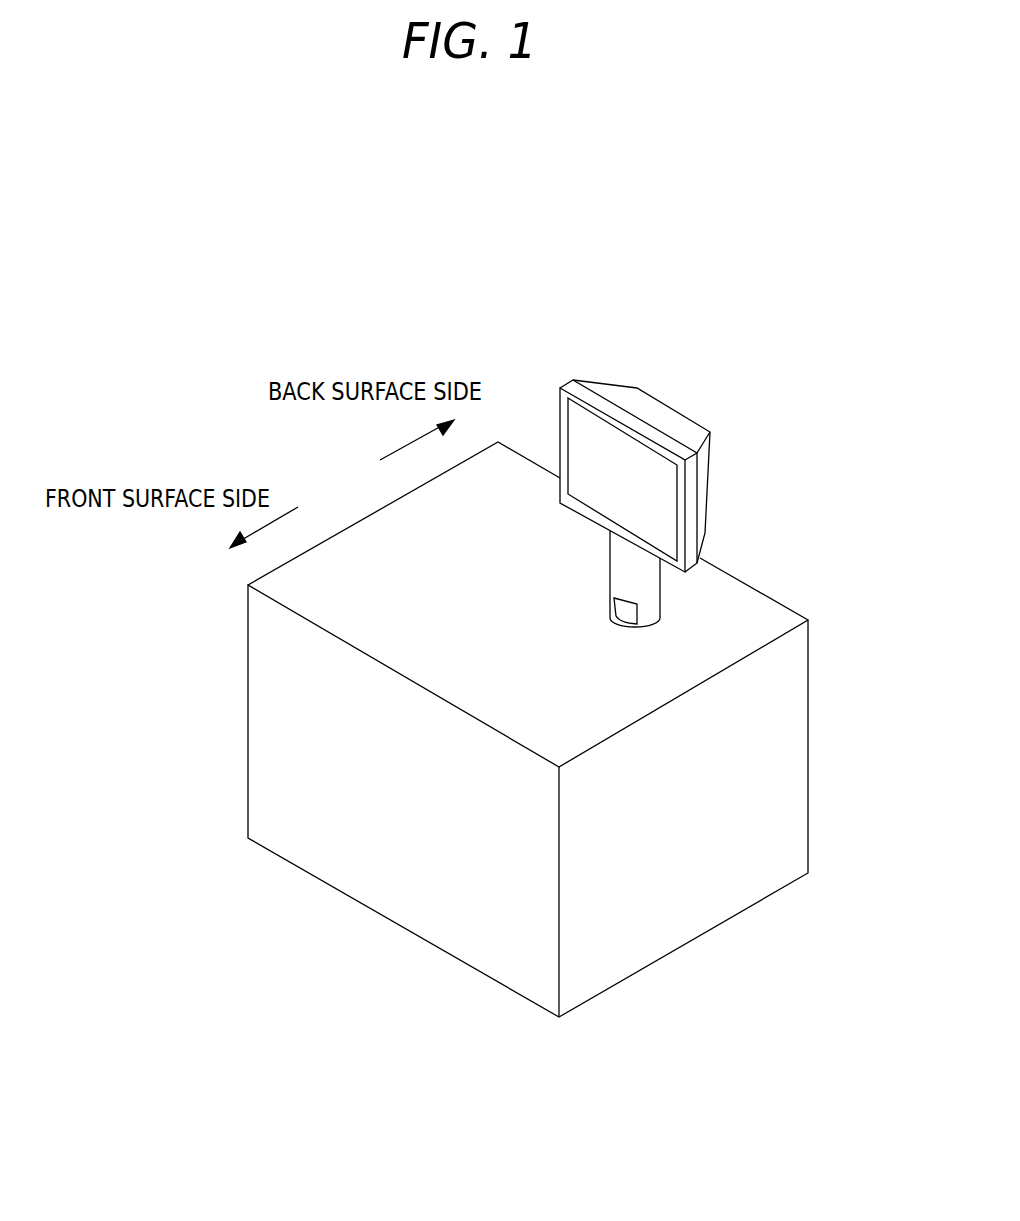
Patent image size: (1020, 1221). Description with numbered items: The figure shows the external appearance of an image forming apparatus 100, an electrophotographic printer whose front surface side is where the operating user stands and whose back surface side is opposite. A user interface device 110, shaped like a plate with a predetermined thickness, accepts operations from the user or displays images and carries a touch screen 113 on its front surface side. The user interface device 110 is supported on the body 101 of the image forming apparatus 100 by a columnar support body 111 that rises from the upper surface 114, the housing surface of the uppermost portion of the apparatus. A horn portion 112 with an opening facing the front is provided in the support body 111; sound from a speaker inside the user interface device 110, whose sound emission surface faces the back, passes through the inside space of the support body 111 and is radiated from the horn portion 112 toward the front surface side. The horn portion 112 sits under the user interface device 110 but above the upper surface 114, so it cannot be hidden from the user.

The image forming apparatus 100 is at (808, 440).
The body 101 is at (793, 792).
The user interface device 110 is at (663, 407).
The support body 111 is at (650, 580).
The horn portion 112 is at (637, 612).
The touch screen 113 is at (657, 475).
The upper surface 114 is at (523, 475).